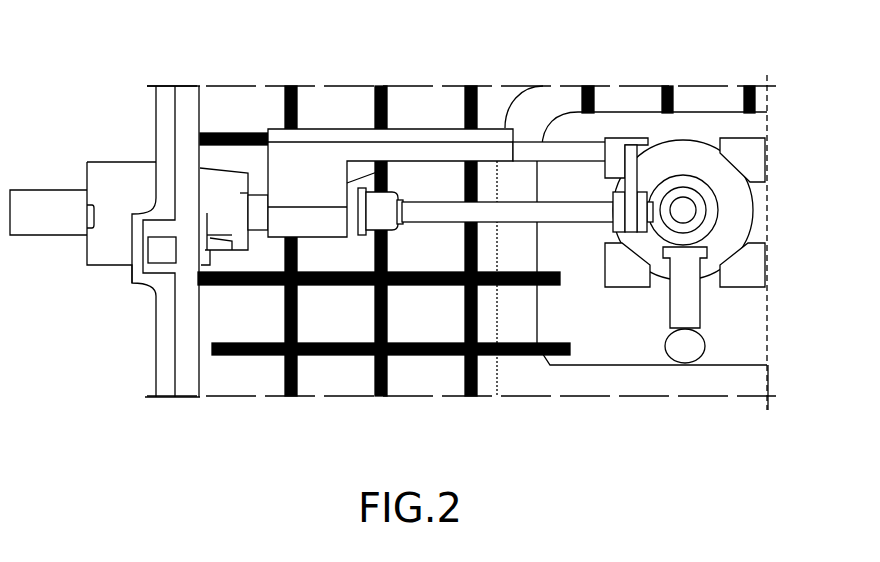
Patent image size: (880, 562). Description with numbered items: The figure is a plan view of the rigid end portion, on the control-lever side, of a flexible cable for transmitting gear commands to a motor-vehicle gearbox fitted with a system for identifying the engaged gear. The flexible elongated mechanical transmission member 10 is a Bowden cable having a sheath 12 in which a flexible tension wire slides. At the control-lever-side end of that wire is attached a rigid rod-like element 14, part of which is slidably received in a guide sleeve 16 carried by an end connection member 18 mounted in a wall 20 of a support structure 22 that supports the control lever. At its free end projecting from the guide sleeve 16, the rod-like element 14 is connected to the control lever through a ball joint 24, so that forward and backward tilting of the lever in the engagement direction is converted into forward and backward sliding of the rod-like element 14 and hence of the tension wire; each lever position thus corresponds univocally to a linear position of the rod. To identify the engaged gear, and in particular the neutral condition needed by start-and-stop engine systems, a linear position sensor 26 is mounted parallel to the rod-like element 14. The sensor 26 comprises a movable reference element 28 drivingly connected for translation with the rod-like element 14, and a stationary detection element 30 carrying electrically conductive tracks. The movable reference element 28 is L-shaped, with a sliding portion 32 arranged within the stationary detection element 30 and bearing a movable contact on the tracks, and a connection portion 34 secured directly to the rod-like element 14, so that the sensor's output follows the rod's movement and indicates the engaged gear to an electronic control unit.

The flexible elongated mechanical transmission member 10 is at (415, 234).
The sheath 12 is at (48, 215).
The rod-like element 14 is at (507, 215).
The guide sleeve 16 is at (257, 217).
The end connection member 18 is at (212, 250).
The wall 20 is at (190, 353).
The support structure 22 is at (225, 118).
The ball joint 24 is at (748, 187).
The linear position sensor 26 is at (487, 119).
The movable reference element 28 is at (590, 150).
The stationary detection element 30 is at (313, 128).
The sliding portion 32 is at (568, 148).
The connection portion 34 is at (630, 178).